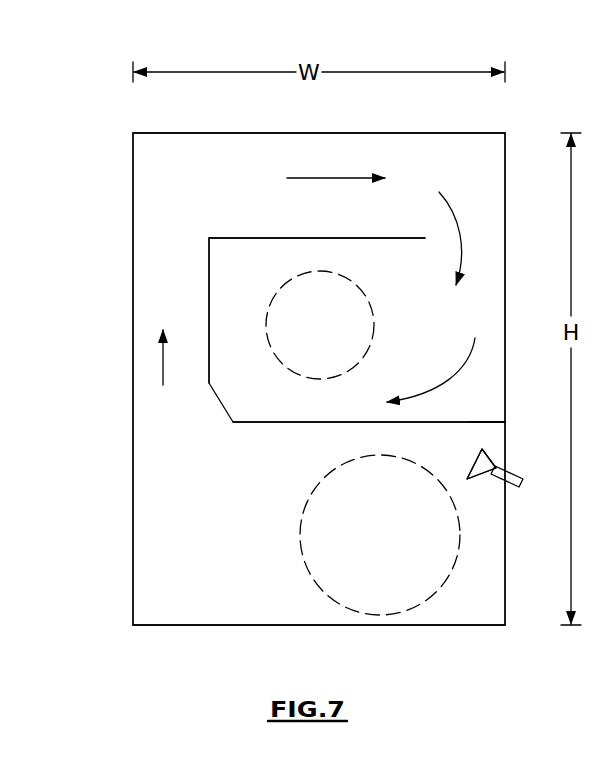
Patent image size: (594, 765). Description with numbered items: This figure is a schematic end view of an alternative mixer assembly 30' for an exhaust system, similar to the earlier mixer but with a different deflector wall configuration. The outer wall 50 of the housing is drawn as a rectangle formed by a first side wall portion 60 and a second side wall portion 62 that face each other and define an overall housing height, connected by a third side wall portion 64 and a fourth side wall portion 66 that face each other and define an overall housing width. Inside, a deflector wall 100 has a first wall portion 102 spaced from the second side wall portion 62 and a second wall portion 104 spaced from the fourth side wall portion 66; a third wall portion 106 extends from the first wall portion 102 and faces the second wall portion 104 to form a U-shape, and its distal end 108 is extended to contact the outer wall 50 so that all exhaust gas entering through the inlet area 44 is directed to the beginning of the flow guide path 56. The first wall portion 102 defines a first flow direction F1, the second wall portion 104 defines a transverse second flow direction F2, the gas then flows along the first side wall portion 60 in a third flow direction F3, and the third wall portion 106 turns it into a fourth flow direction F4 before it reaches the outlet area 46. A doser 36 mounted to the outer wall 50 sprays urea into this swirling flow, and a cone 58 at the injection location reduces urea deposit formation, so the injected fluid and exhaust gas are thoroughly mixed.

The mixer assembly 30' is at (272, 346).
The doser 36 is at (512, 476).
The inlet area 44 is at (300, 548).
The outlet area 46 is at (375, 320).
The outer wall 50 is at (133, 625).
The flow guide path 56 is at (168, 283).
The cone 58 is at (480, 480).
The first side wall portion 60 is at (505, 228).
The second side wall portion 62 is at (133, 561).
The third side wall portion 64 is at (210, 626).
The fourth side wall portion 66 is at (425, 133).
The deflector wall 100 is at (233, 422).
The first wall portion 102 is at (209, 383).
The second wall portion 104 is at (340, 243).
The third wall portion 106 is at (310, 422).
The distal end 108 is at (490, 422).
The first flow direction F1 is at (163, 358).
The second flow direction F2 is at (308, 178).
The third flow direction F3 is at (458, 215).
The fourth flow direction F4 is at (445, 383).